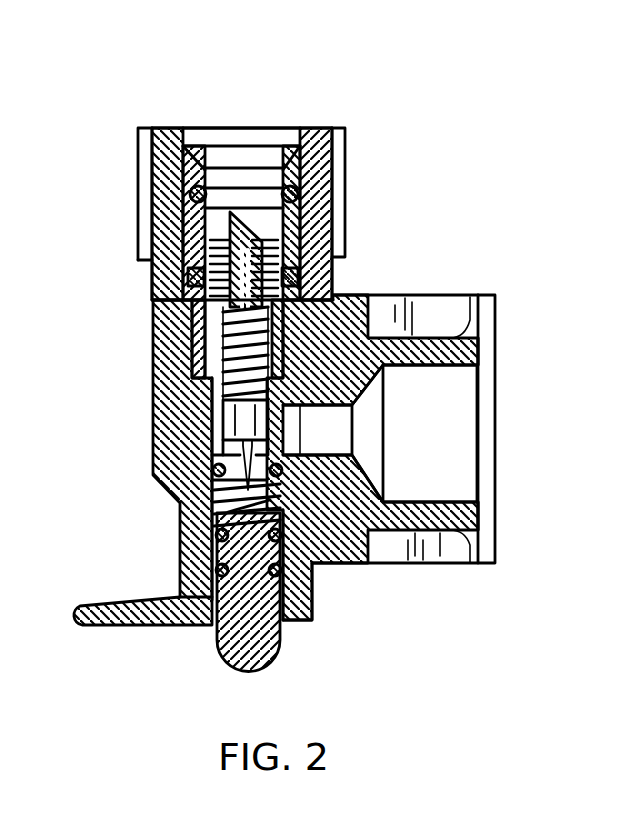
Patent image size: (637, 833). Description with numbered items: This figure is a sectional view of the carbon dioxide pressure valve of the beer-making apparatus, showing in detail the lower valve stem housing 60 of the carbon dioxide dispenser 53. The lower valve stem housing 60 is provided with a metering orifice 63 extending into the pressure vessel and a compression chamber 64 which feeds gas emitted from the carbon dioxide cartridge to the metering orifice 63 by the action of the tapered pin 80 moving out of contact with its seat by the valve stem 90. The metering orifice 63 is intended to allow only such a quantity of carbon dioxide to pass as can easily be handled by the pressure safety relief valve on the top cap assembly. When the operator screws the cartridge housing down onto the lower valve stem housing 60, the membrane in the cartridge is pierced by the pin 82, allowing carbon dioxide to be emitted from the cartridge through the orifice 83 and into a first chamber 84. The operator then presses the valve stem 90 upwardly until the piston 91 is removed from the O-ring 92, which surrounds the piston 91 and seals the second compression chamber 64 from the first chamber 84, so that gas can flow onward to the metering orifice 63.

The carbon dioxide dispenser 53 is at (118, 125).
The lower valve stem housing 60 is at (360, 182).
The metering orifice 63 is at (295, 430).
The compression chamber 64 is at (338, 565).
The tapered pin 80 is at (280, 495).
The pin 82 is at (238, 212).
The orifice 83 is at (298, 292).
The first chamber 84 is at (228, 350).
The valve stem 90 is at (253, 650).
The piston 91 is at (240, 432).
The O-ring 92 is at (238, 456).